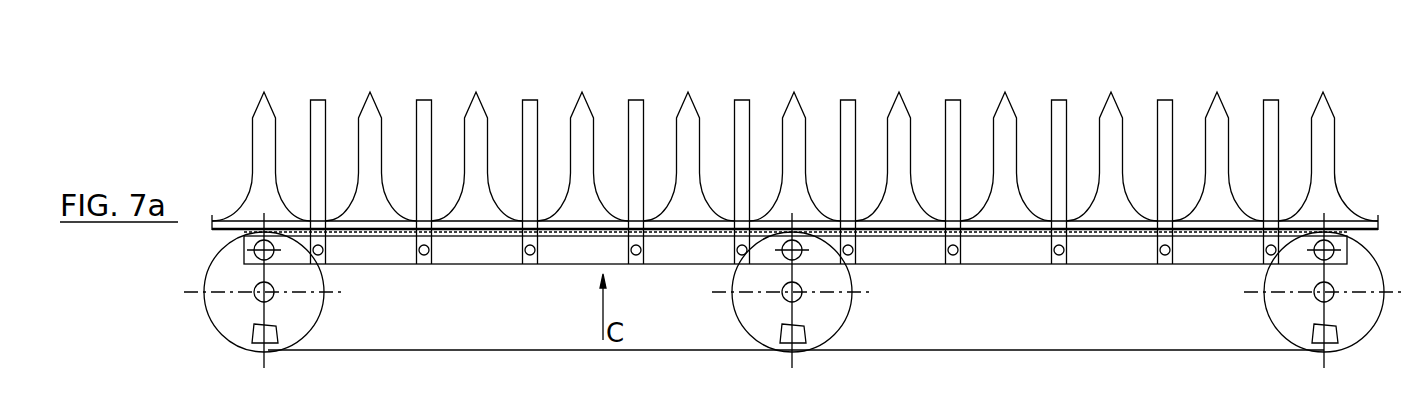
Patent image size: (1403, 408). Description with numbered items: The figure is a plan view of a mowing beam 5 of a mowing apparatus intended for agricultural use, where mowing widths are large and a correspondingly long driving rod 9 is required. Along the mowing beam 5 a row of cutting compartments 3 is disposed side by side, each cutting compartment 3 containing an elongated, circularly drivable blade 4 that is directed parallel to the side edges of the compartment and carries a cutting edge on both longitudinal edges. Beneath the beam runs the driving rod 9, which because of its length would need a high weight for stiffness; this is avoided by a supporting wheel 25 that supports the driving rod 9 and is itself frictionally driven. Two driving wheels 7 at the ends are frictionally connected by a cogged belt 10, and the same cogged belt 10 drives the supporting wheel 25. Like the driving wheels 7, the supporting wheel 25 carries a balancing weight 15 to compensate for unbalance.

The cutting compartment 3 is at (609, 123).
The blade 4 is at (741, 104).
The mowing beam 5 is at (371, 210).
The driving wheel 7 is at (216, 272).
The driving rod 9 is at (478, 264).
The cogged belt 10 is at (387, 350).
The balancing weight 15 is at (252, 335).
The supporting wheel 25 is at (843, 312).